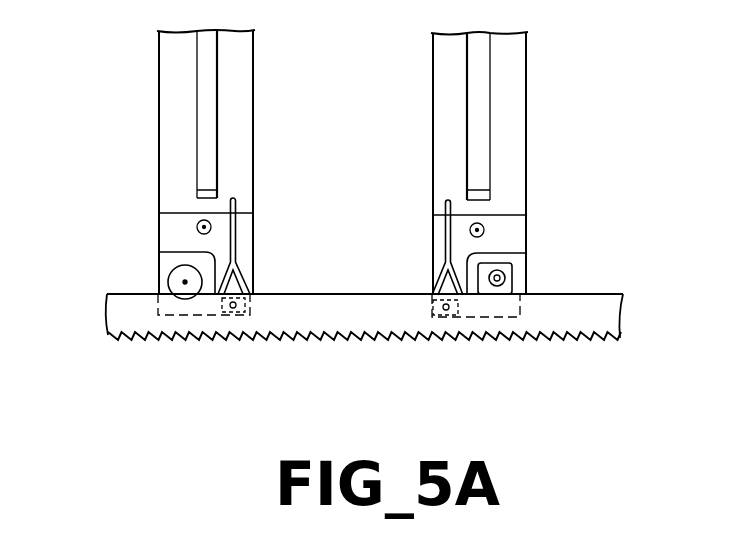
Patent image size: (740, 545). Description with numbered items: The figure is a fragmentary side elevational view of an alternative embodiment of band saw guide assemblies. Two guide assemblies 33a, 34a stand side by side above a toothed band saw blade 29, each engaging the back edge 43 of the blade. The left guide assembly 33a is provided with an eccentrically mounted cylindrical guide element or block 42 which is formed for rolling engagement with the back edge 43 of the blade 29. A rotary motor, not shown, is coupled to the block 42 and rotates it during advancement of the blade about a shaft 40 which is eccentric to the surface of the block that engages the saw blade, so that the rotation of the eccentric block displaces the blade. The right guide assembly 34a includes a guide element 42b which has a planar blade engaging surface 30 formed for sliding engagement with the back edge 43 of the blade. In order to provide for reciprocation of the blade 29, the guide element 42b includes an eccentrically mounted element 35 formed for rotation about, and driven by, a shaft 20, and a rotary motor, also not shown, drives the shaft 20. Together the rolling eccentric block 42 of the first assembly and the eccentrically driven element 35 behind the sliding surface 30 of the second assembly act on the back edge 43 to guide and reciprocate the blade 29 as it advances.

The guide assembly 33a is at (138, 153).
The guide assembly 34a is at (565, 123).
The block 42 is at (158, 255).
The guide element 42b is at (517, 267).
The shaft 40 is at (185, 282).
The eccentrically mounted element 35 is at (497, 278).
The shaft 20 is at (497, 278).
The planar blade engaging surface 30 is at (503, 296).
The back edge 43 is at (303, 293).
The blade 29 is at (358, 313).